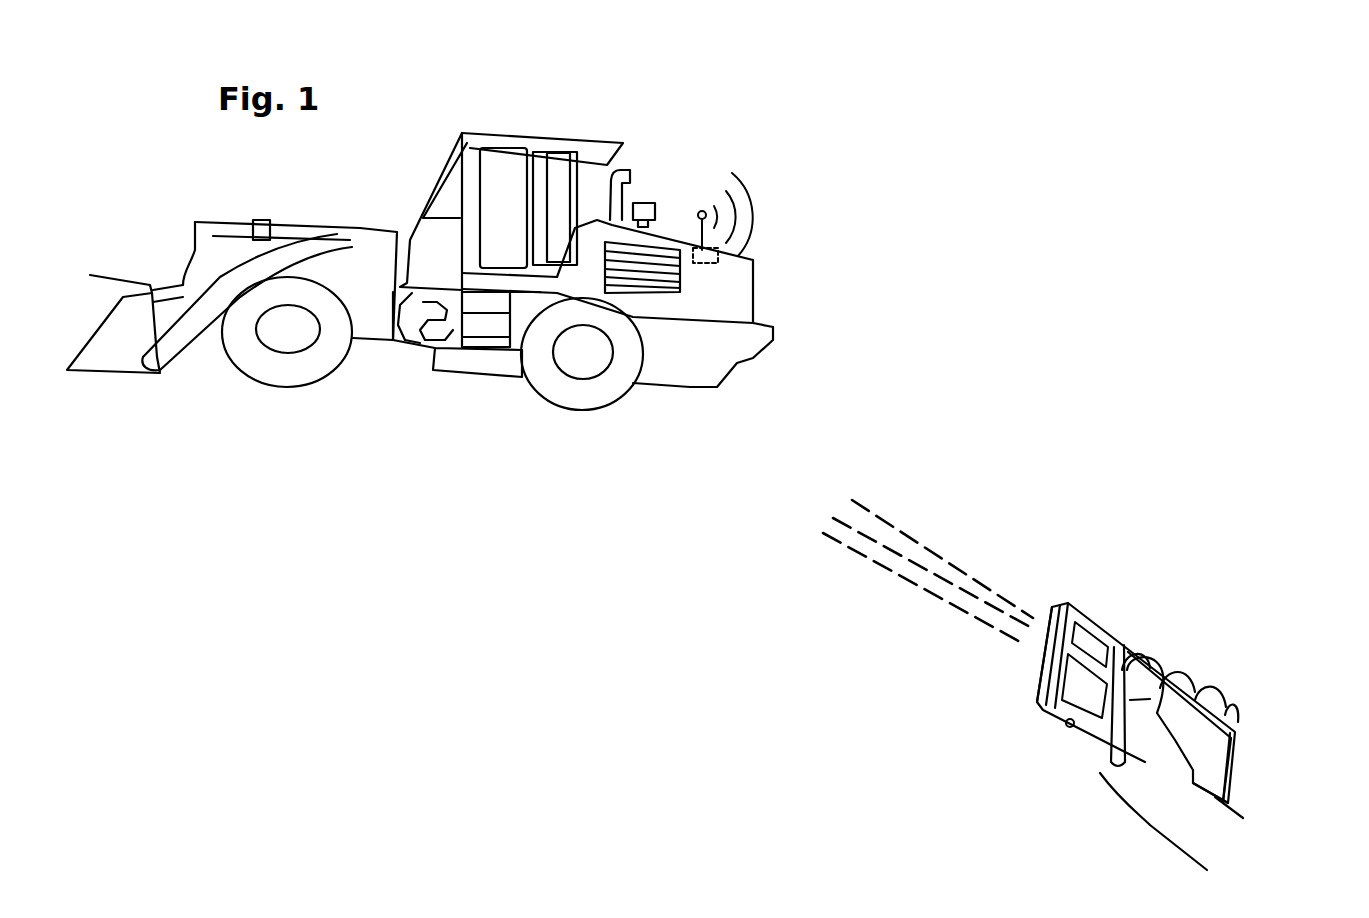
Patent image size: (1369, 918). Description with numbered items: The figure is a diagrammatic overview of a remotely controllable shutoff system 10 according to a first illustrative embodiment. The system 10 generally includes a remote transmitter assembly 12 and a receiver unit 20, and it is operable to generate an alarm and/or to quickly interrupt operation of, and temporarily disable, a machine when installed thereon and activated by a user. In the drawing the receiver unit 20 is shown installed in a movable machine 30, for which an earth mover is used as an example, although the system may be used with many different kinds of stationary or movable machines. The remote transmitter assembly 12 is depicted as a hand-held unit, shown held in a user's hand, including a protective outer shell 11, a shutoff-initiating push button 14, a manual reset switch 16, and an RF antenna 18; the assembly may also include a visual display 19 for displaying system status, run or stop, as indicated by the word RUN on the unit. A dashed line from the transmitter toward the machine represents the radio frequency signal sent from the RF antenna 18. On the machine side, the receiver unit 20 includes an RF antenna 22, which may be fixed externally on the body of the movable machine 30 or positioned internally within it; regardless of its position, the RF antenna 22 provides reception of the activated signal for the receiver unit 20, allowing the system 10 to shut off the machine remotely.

The remotely controllable shutoff system 10 is at (630, 625).
The protective outer shell 11 is at (1246, 729).
The remote transmitter assembly 12 is at (1168, 652).
The shutoff-initiating push button 14 is at (1096, 637).
The manual reset switch 16 is at (1060, 740).
The RF antenna 18 is at (1046, 655).
The visual display 19 is at (1128, 645).
The receiver unit 20 is at (715, 258).
The RF antenna 22 is at (698, 200).
The movable machine 30 is at (409, 401).